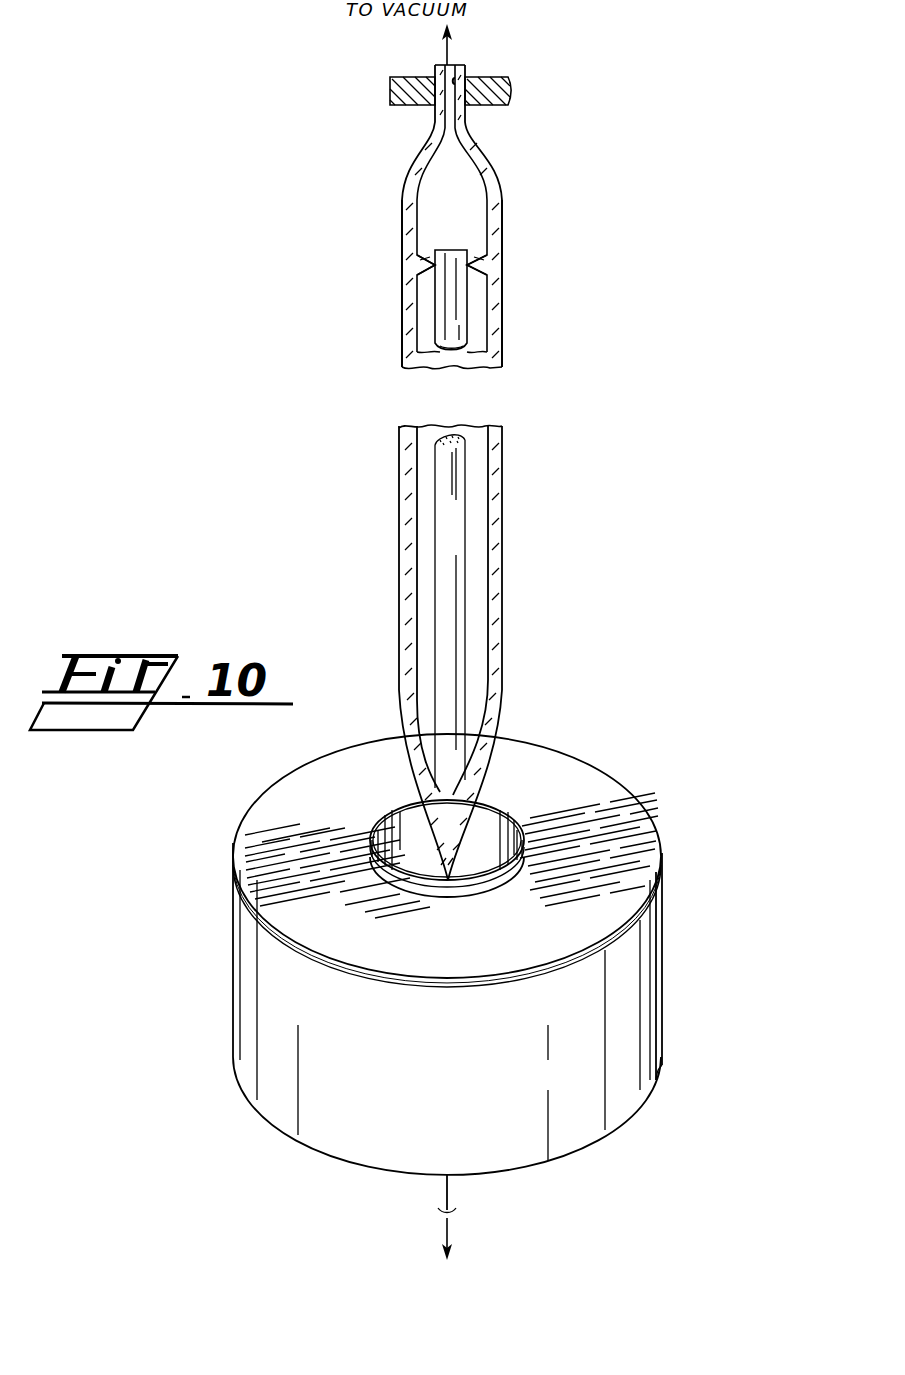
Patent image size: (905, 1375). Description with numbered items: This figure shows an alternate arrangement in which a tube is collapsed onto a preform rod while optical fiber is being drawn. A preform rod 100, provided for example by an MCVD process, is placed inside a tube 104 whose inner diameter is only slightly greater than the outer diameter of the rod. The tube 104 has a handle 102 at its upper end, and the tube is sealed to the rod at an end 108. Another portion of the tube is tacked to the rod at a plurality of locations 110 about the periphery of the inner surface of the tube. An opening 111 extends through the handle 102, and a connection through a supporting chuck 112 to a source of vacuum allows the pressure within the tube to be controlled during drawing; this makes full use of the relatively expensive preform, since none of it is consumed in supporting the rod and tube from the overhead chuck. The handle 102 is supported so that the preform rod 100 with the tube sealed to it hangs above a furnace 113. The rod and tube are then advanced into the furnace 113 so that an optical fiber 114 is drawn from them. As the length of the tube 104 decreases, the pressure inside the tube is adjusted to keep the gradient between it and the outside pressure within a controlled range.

The preform rod 100 is at (470, 280).
The handle 102 is at (477, 153).
The tube 104 is at (503, 334).
The end 108 is at (477, 757).
The locations 110 is at (473, 250).
The opening 111 is at (452, 78).
The supporting chuck 112 is at (402, 110).
The furnace 113 is at (253, 804).
The optical fiber 114 is at (445, 1190).